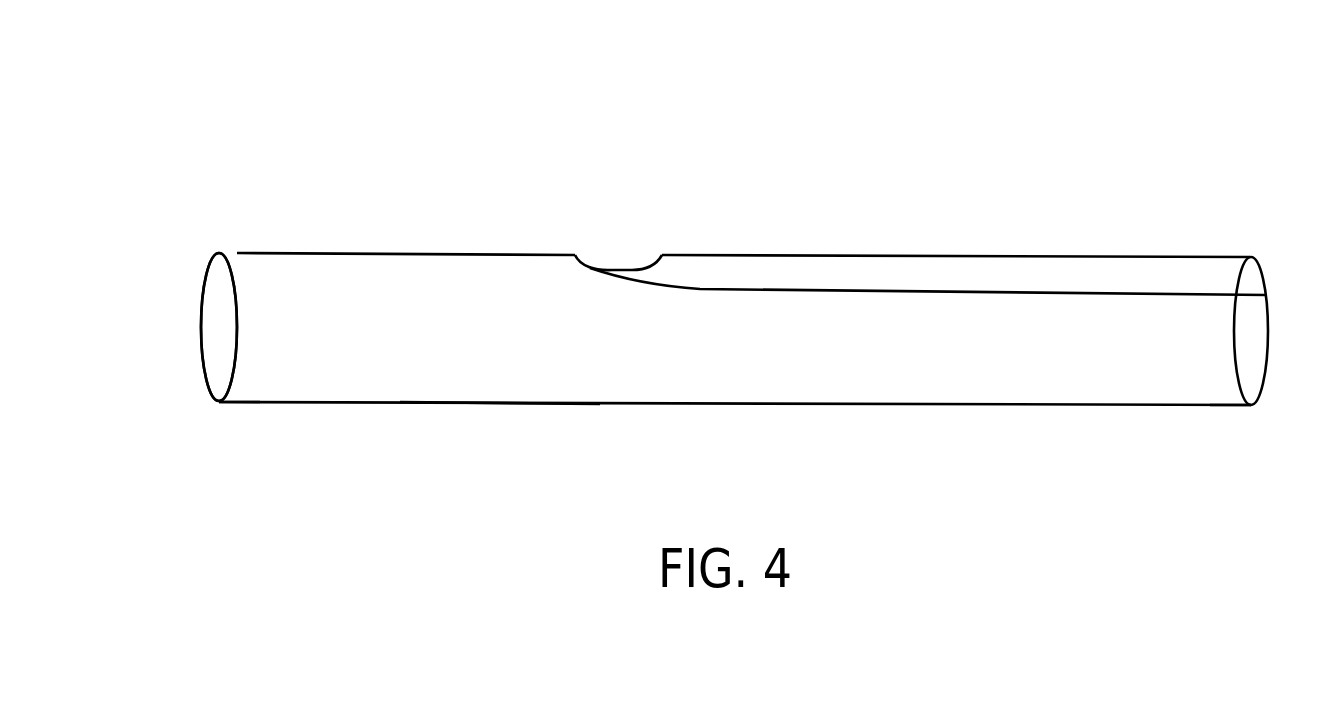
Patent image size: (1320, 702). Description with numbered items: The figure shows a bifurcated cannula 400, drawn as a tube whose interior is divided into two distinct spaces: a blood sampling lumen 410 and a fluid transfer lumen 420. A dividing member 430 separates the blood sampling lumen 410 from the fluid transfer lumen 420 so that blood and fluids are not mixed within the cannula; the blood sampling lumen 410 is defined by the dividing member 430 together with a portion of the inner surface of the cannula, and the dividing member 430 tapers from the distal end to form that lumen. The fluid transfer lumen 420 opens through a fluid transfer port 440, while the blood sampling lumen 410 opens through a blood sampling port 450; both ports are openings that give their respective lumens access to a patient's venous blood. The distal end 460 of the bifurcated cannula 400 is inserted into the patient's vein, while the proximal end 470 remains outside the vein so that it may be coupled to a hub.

The bifurcated cannula 400 is at (392, 98).
The blood sampling lumen 410 is at (1112, 268).
The fluid transfer lumen 420 is at (480, 365).
The dividing member 430 is at (953, 294).
The fluid transfer port 440 is at (213, 299).
The blood sampling port 450 is at (661, 253).
The distal end 460 is at (245, 424).
The proximal end 470 is at (1252, 424).